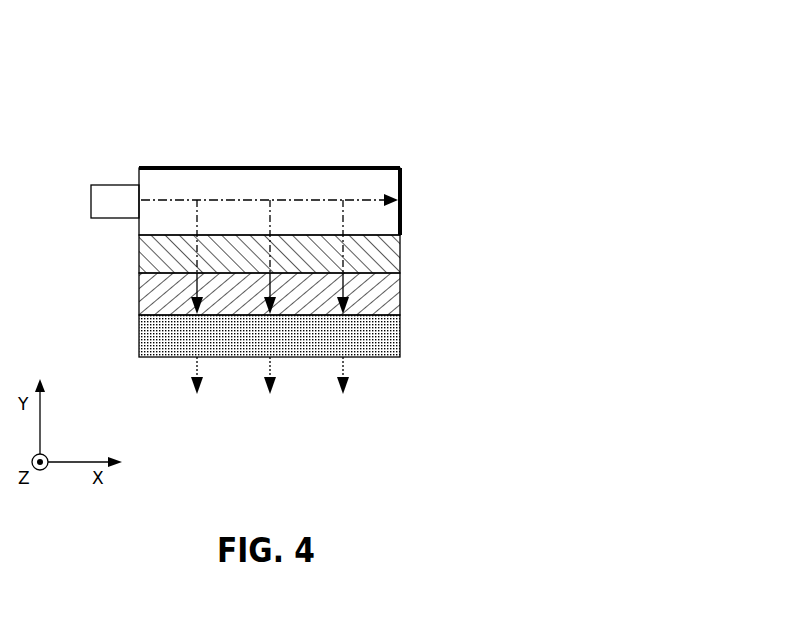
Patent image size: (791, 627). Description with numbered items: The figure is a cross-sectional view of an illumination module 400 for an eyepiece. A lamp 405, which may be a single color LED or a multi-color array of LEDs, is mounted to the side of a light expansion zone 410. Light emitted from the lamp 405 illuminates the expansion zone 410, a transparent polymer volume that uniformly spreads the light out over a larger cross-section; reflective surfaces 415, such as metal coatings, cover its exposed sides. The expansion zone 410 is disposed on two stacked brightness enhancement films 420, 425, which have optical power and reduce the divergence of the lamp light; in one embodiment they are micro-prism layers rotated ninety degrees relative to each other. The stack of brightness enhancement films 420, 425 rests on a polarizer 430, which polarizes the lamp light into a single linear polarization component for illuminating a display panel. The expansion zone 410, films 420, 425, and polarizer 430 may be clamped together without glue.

The illumination module 400 is at (530, 97).
The lamp 405 is at (91, 200).
The light expansion zone 410 is at (153, 182).
The reflective surfaces 415 is at (287, 168).
The brightness enhancement film 420 is at (402, 256).
The brightness enhancement film 425 is at (138, 295).
The polarizer 430 is at (402, 336).